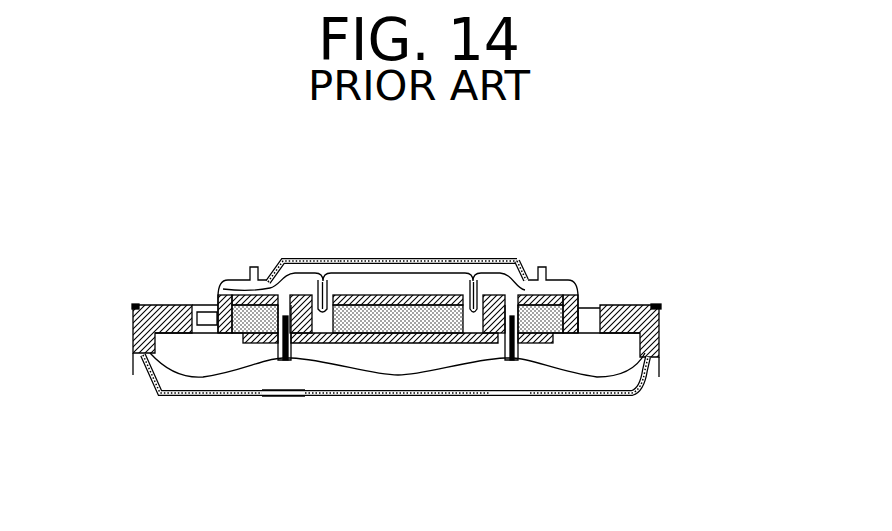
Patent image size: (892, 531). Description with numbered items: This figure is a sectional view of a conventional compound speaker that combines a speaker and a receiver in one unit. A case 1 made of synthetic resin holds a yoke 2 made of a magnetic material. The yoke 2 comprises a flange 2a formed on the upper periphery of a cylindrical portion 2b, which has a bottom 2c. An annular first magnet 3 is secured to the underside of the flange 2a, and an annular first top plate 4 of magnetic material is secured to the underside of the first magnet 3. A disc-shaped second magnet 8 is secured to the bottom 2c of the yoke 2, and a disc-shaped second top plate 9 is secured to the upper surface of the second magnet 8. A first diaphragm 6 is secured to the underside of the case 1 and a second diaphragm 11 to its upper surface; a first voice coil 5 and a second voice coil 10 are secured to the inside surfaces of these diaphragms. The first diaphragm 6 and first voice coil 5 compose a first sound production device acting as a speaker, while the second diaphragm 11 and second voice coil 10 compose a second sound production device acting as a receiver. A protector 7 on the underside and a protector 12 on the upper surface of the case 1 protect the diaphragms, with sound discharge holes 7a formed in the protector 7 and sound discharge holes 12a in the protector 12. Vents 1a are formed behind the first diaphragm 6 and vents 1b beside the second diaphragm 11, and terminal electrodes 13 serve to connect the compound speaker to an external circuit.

The case 1 is at (660, 335).
The vents 1a is at (190, 303).
The vents 1b is at (580, 294).
The yoke 2 is at (540, 295).
The flange 2a is at (213, 305).
The cylindrical portion 2b is at (480, 343).
The bottom 2c is at (330, 345).
The first magnet 3 is at (537, 345).
The first top plate 4 is at (550, 345).
The first voice coil 5 is at (297, 362).
The first diaphragm 6 is at (160, 390).
The protector 7 is at (645, 390).
The sound discharge holes 7a is at (290, 396).
The second magnet 8 is at (367, 276).
The second top plate 9 is at (440, 300).
The second voice coil 10 is at (483, 290).
The second diaphragm 11 is at (517, 263).
The protector 12 is at (273, 260).
The sound discharge holes 12a is at (345, 259).
The terminal electrodes 13 is at (663, 307).